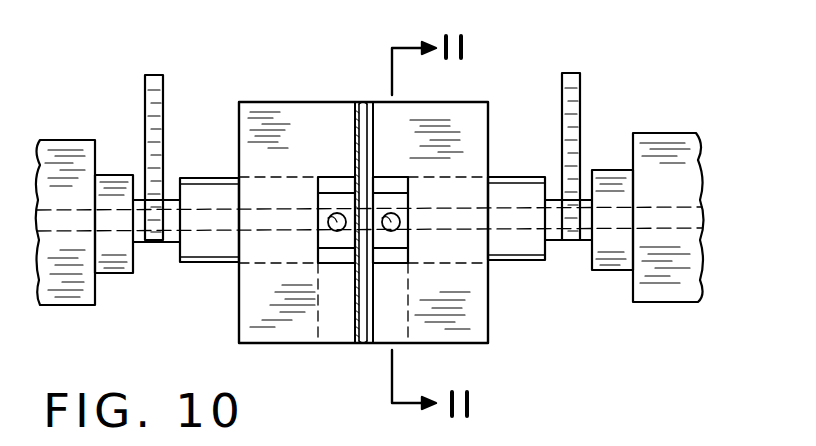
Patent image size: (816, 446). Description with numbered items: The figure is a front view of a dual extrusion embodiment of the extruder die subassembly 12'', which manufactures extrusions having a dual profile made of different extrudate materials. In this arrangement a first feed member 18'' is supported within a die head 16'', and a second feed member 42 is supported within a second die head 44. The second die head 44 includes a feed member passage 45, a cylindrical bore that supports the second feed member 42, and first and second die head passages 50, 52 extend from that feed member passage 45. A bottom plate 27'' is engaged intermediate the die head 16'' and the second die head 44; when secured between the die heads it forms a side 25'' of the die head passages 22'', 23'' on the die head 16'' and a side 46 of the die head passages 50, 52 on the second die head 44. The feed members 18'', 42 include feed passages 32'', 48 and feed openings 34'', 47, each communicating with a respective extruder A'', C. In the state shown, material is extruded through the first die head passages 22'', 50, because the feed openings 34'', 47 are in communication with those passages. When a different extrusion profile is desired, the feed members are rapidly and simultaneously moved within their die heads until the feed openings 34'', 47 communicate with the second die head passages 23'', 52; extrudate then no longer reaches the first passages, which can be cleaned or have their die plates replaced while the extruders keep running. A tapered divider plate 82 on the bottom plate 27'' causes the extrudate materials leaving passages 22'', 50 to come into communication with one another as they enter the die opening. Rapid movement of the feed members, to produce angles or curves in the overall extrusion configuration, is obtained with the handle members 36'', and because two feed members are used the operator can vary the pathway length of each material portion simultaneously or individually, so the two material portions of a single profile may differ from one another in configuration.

The extruder A'' is at (65, 245).
The extruder C is at (665, 283).
The extruder die subassembly 12'' is at (552, 47).
The die head 16'' is at (253, 353).
The feed member 18'' is at (206, 199).
The die head passage 22'' is at (292, 162).
The die head passage 23'' is at (295, 361).
The side 25'' is at (337, 202).
The bottom plate 27'' is at (341, 364).
The feed passage 32'' is at (151, 239).
The feed opening 34'' is at (265, 271).
The handle member 36'' is at (123, 157).
The second feed member 42 is at (503, 262).
The second die head 44 is at (473, 325).
The feed member passage 45 is at (490, 190).
The side 46 is at (382, 268).
The feed opening 47 is at (405, 248).
The feed passage 48 is at (527, 224).
The first die head passage 50 is at (398, 182).
The second die head passage 52 is at (406, 321).
The tapered divider plate 82 is at (365, 102).